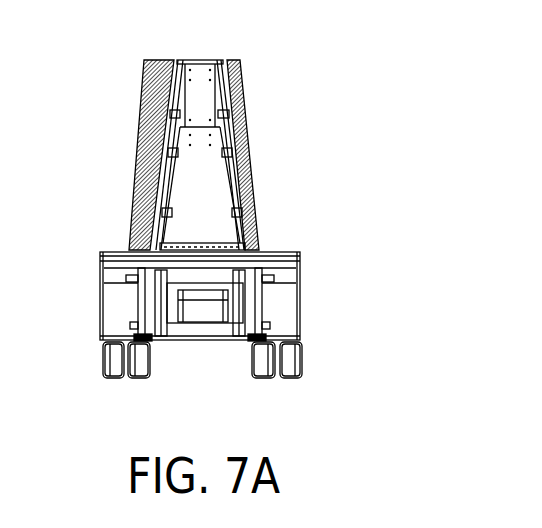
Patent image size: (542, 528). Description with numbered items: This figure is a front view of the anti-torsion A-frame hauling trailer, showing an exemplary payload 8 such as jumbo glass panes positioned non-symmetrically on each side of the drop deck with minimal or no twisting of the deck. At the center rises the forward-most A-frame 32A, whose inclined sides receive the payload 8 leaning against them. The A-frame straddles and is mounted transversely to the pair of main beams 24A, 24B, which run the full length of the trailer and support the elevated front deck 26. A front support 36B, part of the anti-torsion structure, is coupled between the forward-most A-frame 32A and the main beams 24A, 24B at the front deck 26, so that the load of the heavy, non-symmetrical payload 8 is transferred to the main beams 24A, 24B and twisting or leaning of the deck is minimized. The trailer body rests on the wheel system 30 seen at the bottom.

The payload 8 is at (141, 100).
The front support 36B is at (160, 164).
The front deck 26 is at (262, 250).
The forward-most A-frame 32A is at (237, 88).
The main beam 24A is at (167, 315).
The main beam 24B is at (240, 318).
The wheel system 30 is at (152, 383).